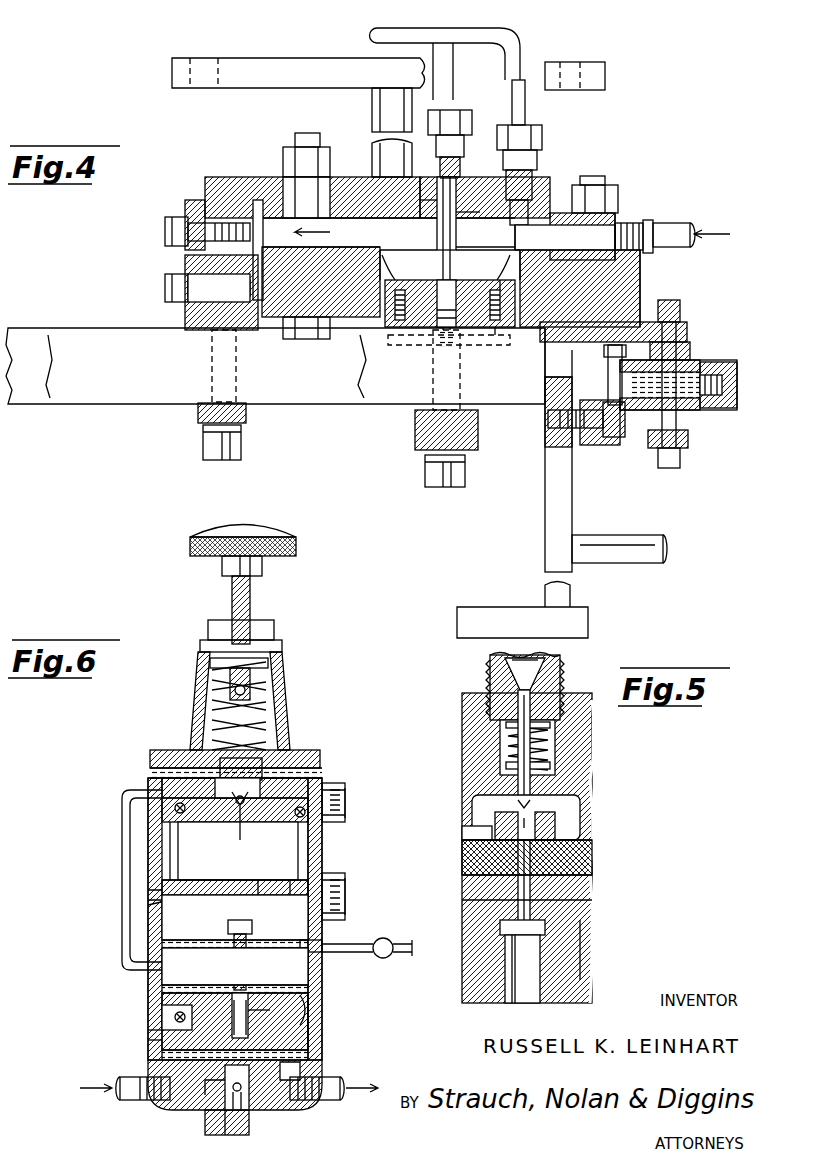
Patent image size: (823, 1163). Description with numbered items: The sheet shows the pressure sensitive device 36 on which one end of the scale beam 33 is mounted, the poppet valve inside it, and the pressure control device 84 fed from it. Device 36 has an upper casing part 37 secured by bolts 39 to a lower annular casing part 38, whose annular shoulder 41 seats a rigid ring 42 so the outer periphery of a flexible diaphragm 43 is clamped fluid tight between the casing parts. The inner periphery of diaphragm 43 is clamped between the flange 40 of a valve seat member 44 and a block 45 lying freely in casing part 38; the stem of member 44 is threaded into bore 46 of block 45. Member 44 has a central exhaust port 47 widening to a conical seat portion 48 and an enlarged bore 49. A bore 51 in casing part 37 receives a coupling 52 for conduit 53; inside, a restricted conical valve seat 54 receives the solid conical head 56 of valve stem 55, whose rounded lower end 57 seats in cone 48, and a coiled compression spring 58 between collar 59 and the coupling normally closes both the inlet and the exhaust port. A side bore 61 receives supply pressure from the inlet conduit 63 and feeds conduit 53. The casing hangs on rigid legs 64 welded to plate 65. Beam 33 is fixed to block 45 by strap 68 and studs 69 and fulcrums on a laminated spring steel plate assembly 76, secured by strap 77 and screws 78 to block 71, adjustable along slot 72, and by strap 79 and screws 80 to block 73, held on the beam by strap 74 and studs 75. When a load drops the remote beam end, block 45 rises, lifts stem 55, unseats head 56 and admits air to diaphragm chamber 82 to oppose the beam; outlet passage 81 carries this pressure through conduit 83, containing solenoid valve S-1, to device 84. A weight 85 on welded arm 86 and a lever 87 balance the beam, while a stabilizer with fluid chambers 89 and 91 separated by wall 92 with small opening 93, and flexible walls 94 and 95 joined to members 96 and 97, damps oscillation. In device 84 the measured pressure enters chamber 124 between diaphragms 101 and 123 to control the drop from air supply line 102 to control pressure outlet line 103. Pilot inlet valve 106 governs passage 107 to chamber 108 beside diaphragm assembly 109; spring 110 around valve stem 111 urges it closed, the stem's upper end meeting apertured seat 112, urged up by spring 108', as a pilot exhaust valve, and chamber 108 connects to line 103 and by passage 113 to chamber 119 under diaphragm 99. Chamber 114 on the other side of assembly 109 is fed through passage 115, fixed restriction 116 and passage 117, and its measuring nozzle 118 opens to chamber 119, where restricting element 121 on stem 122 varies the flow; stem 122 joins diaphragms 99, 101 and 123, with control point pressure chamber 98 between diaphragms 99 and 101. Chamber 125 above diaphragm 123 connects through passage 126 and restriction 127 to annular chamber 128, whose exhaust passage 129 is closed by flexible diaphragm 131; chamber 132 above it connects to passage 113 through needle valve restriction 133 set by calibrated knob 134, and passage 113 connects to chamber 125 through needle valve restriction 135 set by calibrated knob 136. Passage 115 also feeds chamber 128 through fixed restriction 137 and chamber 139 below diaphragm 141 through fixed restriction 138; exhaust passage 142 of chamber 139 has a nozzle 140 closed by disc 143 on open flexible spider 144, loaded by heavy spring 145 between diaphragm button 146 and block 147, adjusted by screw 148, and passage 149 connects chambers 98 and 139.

In FIG. 4, the scale beam 33 is at (110, 330).
In FIG. 4, the pressure sensitive device 36 is at (552, 185).
In FIG. 4, the upper casing part 37 is at (616, 214).
In FIG. 5, the upper casing part 37 is at (462, 712).
In FIG. 4, the lower annular casing part 38 is at (640, 293).
In FIG. 4, the bolts 39 is at (610, 190).
In FIG. 4, the flange 40 is at (470, 236).
In FIG. 4, the annular shoulder 41 is at (535, 280).
In FIG. 4, the rigid ring 42 is at (580, 288).
In FIG. 4, the flexible diaphragm 43 is at (450, 303).
In FIG. 5, the flexible diaphragm 43 is at (592, 870).
In FIG. 4, the valve seat member 44 is at (470, 214).
In FIG. 5, the valve seat member 44 is at (570, 890).
In FIG. 4, the block 45 is at (496, 335).
In FIG. 5, the block 45 is at (580, 913).
In FIG. 4, the bore 46 is at (440, 336).
In FIG. 5, the bore 46 is at (538, 995).
In FIG. 4, the exhaust port 47 is at (412, 302).
In FIG. 5, the exhaust port 47 is at (505, 890).
In FIG. 4, the conical seat portion 48 is at (395, 226).
In FIG. 5, the conical seat portion 48 is at (462, 832).
In FIG. 4, the enlarged bore 49 is at (437, 212).
In FIG. 5, the enlarged bore 49 is at (532, 815).
In FIG. 4, the bore 51 is at (437, 200).
In FIG. 5, the bore 51 is at (518, 776).
In FIG. 4, the coupling 52 is at (442, 150).
In FIG. 5, the coupling 52 is at (490, 682).
In FIG. 4, the conduit 53 is at (455, 72).
In FIG. 5, the conical valve seat 54 is at (552, 676).
In FIG. 4, the valve stem 55 is at (458, 192).
In FIG. 5, the valve stem 55 is at (518, 806).
In FIG. 5, the conical head 56 is at (505, 668).
In FIG. 5, the rounded lower end 57 is at (545, 830).
In FIG. 4, the coiled compression spring 58 is at (460, 176).
In FIG. 5, the coiled compression spring 58 is at (548, 742).
In FIG. 5, the collar 59 is at (550, 768).
In FIG. 4, the side bore 61 is at (585, 228).
In FIG. 4, the inlet conduit 63 is at (668, 250).
In FIG. 4, the rigid legs 64 is at (372, 100).
In FIG. 4, the plate 65 is at (314, 68).
In FIG. 4, the strap 68 is at (478, 432).
In FIG. 4, the studs 69 is at (465, 472).
In FIG. 4, the block 71 is at (238, 180).
In FIG. 4, the slot 72 is at (330, 180).
In FIG. 4, the block 73 is at (240, 340).
In FIG. 4, the strap 74 is at (248, 416).
In FIG. 4, the studs 75 is at (243, 446).
In FIG. 4, the laminated spring steel plate assembly 76 is at (186, 262).
In FIG. 4, the strap 77 is at (195, 200).
In FIG. 4, the screws 78 is at (175, 215).
In FIG. 4, the strap 79 is at (185, 315).
In FIG. 4, the screws 80 is at (165, 285).
In FIG. 4, the outlet passage 81 is at (333, 262).
In FIG. 4, the diaphragm chamber 82 is at (540, 230).
In FIG. 6, the conduit 83 is at (380, 960).
In FIG. 6, the pressure control device 84 is at (338, 781).
In FIG. 4, the weight 85 is at (590, 618).
In FIG. 4, the welded arm 86 is at (572, 494).
In FIG. 4, the lever 87 is at (645, 527).
In FIG. 4, the fluid chamber 89 is at (700, 362).
In FIG. 4, the fluid chamber 91 is at (700, 405).
In FIG. 4, the wall 92 is at (688, 410).
In FIG. 4, the small opening 93 is at (690, 372).
In FIG. 4, the flexible chamber wall 94 is at (690, 340).
In FIG. 4, the flexible chamber wall 95 is at (648, 402).
In FIG. 4, the member 96 is at (684, 310).
In FIG. 4, the member 97 is at (690, 445).
In FIG. 6, the control point pressure chamber 98 is at (300, 955).
In FIG. 6, the diaphragm 99 is at (310, 1010).
In FIG. 6, the flexible diaphragm 101 is at (308, 945).
In FIG. 6, the air supply line 102 is at (130, 1100).
In FIG. 6, the control pressure outlet line 103 is at (325, 1100).
In FIG. 6, the pilot inlet valve 106 is at (220, 1128).
In FIG. 6, the passage 107 is at (230, 1095).
In FIG. 6, the chamber 108 is at (212, 1080).
In FIG. 6, the spring 108' is at (322, 1066).
In FIG. 6, the flexible diaphragm assembly 109 is at (310, 1055).
In FIG. 6, the spring 110 is at (249, 1125).
In FIG. 6, the valve stem 111 is at (205, 1090).
In FIG. 6, the apertured seat 112 is at (248, 1020).
In FIG. 6, the passage 113 is at (310, 990).
In FIG. 6, the chamber 114 is at (160, 1040).
In FIG. 6, the passage 115 is at (155, 1028).
In FIG. 6, the fixed pressure reducing restriction 116 is at (162, 1012).
In FIG. 6, the passage 117 is at (232, 1020).
In FIG. 6, the measuring nozzle 118 is at (220, 1010).
In FIG. 6, the chamber 119 is at (244, 1000).
In FIG. 6, the nozzle opening restricting element 121 is at (235, 966).
In FIG. 6, the stem 122 is at (252, 930).
In FIG. 6, the diaphragm 123 is at (320, 942).
In FIG. 6, the chamber 124 is at (380, 940).
In FIG. 6, the chamber 125 is at (175, 927).
In FIG. 6, the passage 126 is at (285, 880).
In FIG. 6, the fixed pressure reducing restriction 127 is at (262, 880).
In FIG. 6, the annular chamber 128 is at (218, 880).
In FIG. 6, the exhaust passage 129 is at (148, 905).
In FIG. 6, the flexible diaphragm 131 is at (210, 880).
In FIG. 6, the chamber 132 is at (308, 870).
In FIG. 6, the adjustable needle valve restriction 133 is at (345, 806).
In FIG. 6, the calibrated knob 134 is at (345, 818).
In FIG. 6, the adjustable needle valve restriction 135 is at (345, 890).
In FIG. 6, the calibrated knob 136 is at (345, 910).
In FIG. 6, the fixed restriction 137 is at (180, 880).
In FIG. 6, the fixed restriction 138 is at (180, 822).
In FIG. 6, the chamber 139 is at (305, 775).
In FIG. 6, the nozzle 140 is at (246, 822).
In FIG. 6, the diaphragm 141 is at (300, 768).
In FIG. 6, the exhaust passage 142 is at (148, 808).
In FIG. 6, the disc 143 is at (246, 798).
In FIG. 6, the open flexible spider 144 is at (170, 752).
In FIG. 6, the heavy spring 145 is at (272, 700).
In FIG. 6, the central diaphragm button 146 is at (282, 740).
In FIG. 6, the block 147 is at (268, 664).
In FIG. 6, the screw 148 is at (298, 546).
In FIG. 6, the passage 149 is at (122, 888).
In FIG. 6, the solenoid actuated valve S-1 is at (393, 967).